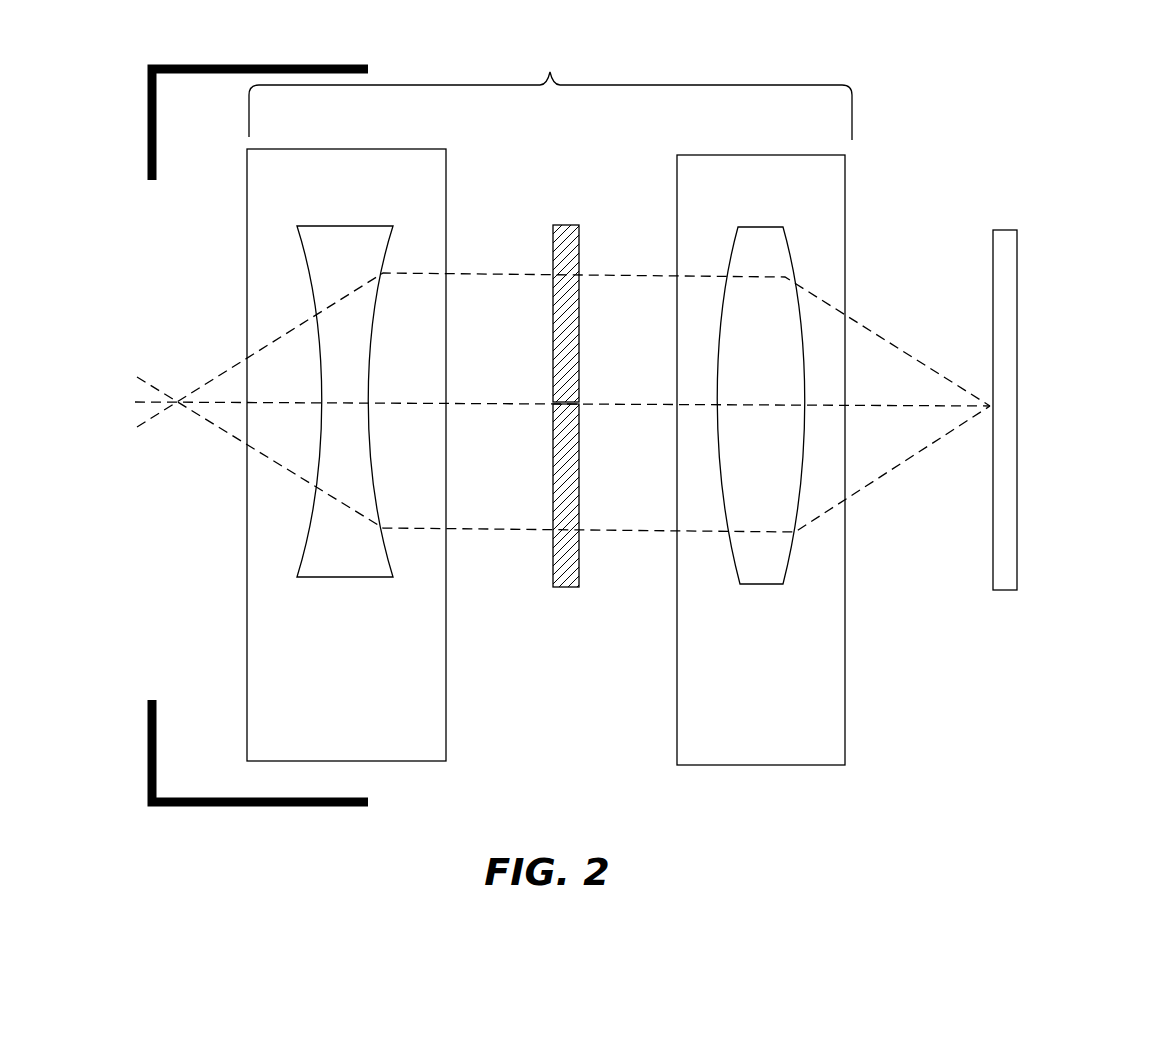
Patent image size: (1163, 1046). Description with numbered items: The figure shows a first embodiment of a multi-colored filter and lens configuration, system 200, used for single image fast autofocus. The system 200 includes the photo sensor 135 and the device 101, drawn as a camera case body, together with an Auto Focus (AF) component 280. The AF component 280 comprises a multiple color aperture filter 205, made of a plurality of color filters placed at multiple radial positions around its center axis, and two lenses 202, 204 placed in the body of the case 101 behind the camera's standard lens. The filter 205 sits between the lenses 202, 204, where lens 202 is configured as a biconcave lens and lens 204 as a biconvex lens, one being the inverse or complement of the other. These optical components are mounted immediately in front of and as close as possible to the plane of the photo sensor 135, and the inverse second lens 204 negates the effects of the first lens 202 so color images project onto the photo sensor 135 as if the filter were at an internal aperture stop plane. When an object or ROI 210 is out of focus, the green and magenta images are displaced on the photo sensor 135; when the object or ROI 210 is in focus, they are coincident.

The device 101 is at (147, 130).
The system 200 is at (938, 90).
The biconcave lens 202 is at (382, 226).
The biconvex lens 204 is at (787, 243).
The multiple color aperture filter 205 is at (567, 225).
The object or ROI 210 is at (191, 406).
The photo sensor 135 is at (993, 287).
The Auto Focus (AF) component 280 is at (549, 393).